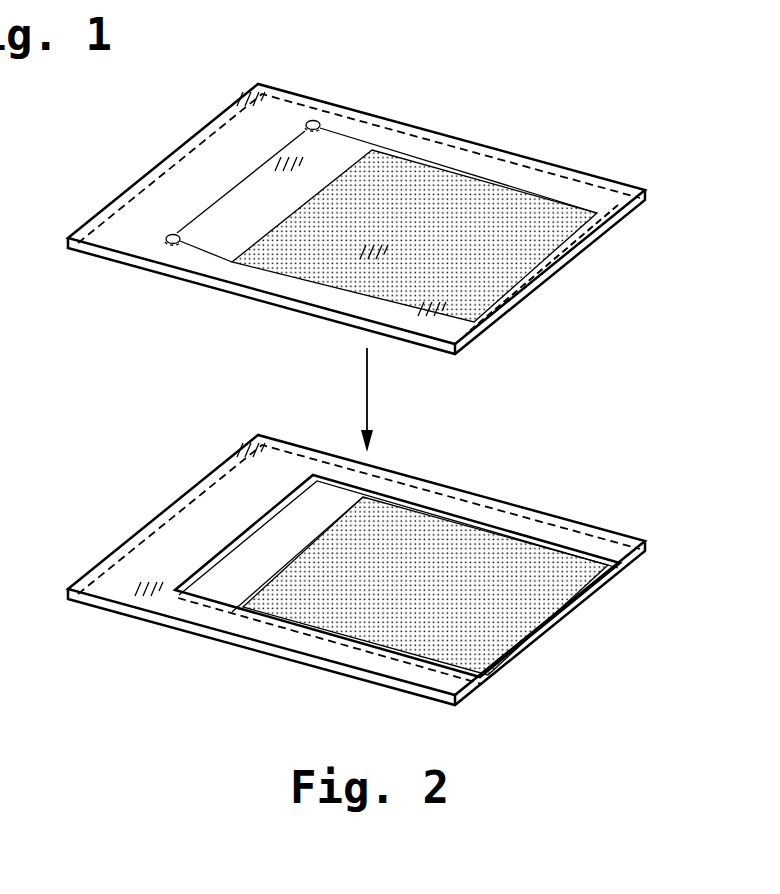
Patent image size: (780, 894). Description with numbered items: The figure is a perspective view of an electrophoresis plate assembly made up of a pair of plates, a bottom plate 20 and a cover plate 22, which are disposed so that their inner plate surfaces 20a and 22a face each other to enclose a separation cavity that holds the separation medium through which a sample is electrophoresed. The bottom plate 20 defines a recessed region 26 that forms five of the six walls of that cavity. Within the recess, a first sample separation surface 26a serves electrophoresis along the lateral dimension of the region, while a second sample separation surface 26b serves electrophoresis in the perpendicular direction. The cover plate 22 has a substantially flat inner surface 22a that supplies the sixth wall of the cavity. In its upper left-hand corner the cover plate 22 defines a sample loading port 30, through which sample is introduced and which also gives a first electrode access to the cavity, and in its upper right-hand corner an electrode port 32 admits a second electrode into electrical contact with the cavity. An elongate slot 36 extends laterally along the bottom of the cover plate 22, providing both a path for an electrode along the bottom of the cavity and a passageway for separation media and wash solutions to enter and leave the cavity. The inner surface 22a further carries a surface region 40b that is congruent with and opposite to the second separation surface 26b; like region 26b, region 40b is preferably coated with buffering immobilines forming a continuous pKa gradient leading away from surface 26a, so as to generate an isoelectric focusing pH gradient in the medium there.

In FIG. 2, the bottom plate 20 is at (553, 492).
In FIG. 2, the inner plate surface 20a is at (103, 583).
In FIG. 1, the cover plate 22 is at (557, 56).
In FIG. 1, the inner surface 22a is at (427, 150).
In FIG. 2, the recessed region 26 is at (342, 548).
In FIG. 2, the first sample separation surface 26a is at (230, 588).
In FIG. 2, the second sample separation surface 26b is at (342, 622).
In FIG. 1, the sample loading port 30 is at (177, 236).
In FIG. 1, the electrode port 32 is at (313, 121).
In FIG. 1, the elongate slot 36 is at (596, 214).
In FIG. 1, the surface region 40b is at (463, 190).